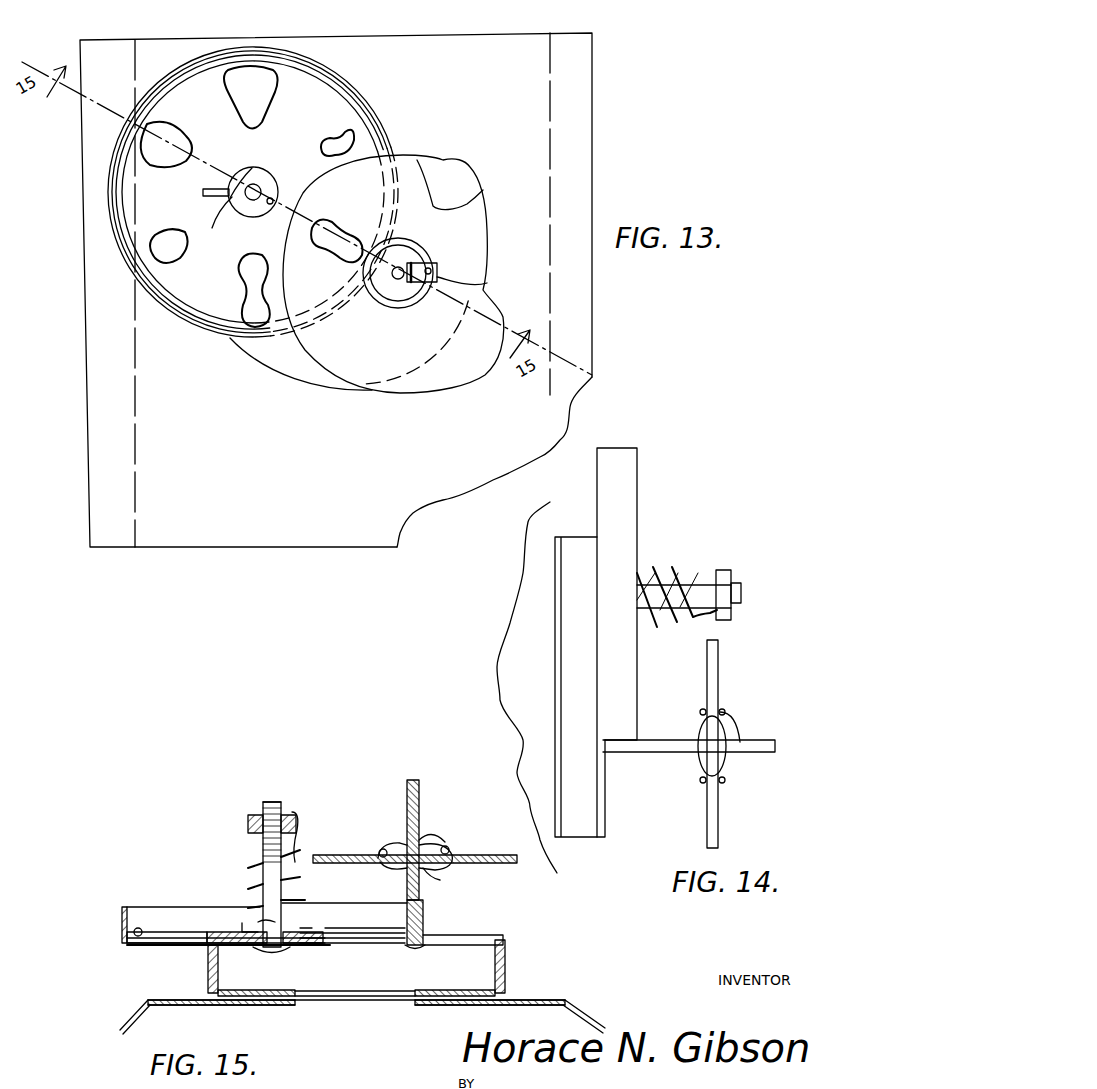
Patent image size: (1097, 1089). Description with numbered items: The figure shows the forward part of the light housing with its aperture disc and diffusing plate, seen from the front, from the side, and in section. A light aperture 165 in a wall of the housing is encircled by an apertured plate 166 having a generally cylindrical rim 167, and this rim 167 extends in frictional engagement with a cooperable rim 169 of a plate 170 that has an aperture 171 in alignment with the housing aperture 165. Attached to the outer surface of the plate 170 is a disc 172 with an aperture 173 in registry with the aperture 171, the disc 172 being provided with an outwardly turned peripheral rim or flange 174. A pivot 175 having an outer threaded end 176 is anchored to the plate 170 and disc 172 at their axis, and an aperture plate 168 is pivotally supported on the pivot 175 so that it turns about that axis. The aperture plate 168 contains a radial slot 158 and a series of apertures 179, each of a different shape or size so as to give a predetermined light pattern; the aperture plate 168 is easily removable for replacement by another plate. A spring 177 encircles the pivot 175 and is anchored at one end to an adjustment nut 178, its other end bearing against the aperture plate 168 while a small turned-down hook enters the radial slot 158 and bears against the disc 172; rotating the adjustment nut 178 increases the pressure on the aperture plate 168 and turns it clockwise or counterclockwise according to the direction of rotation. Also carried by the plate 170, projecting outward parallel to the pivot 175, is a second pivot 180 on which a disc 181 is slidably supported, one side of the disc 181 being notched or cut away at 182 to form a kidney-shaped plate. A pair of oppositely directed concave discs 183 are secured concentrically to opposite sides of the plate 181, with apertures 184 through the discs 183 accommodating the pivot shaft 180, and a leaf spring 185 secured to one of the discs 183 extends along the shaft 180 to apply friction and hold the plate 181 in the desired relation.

In FIG. 13, the radial slot 158 is at (225, 225).
In FIG. 15, the light aperture 165 is at (365, 995).
In FIG. 15, the apertured plate 166 is at (420, 980).
In FIG. 15, the cylindrical rim 167 is at (356, 968).
In FIG. 13, the aperture plate 168 is at (148, 210).
In FIG. 15, the aperture plate 168 is at (165, 935).
In FIG. 14, the cooperable rim 169 is at (585, 790).
In FIG. 15, the cooperable rim 169 is at (208, 970).
In FIG. 15, the plate 170 is at (490, 932).
In FIG. 15, the aperture 171 is at (348, 935).
In FIG. 15, the disc 172 is at (127, 948).
In FIG. 15, the aperture 173 is at (350, 936).
In FIG. 14, the peripheral rim or flange 174 is at (630, 495).
In FIG. 15, the peripheral rim or flange 174 is at (122, 920).
In FIG. 13, the pivot 175 is at (256, 192).
In FIG. 14, the pivot 175 is at (742, 596).
In FIG. 15, the pivot 175 is at (272, 802).
In FIG. 15, the outer threaded end 176 is at (262, 812).
In FIG. 13, the spring 177 is at (232, 166).
In FIG. 14, the spring 177 is at (678, 568).
In FIG. 15, the spring 177 is at (248, 888).
In FIG. 14, the adjustment nut 178 is at (725, 570).
In FIG. 15, the adjustment nut 178 is at (248, 828).
In FIG. 13, the apertures 179 is at (175, 126).
In FIG. 14, the second pivot 180 is at (768, 742).
In FIG. 15, the second pivot 180 is at (413, 780).
In FIG. 13, the disc 181 is at (400, 392).
In FIG. 14, the disc 181 is at (720, 660).
In FIG. 15, the disc 181 is at (476, 856).
In FIG. 13, the notch 182 is at (445, 210).
In FIG. 13, the concave discs 183 is at (405, 295).
In FIG. 14, the concave discs 183 is at (728, 755).
In FIG. 15, the concave discs 183 is at (395, 848).
In FIG. 15, the apertures 184 is at (450, 883).
In FIG. 13, the leaf spring 185 is at (437, 266).
In FIG. 14, the leaf spring 185 is at (732, 722).
In FIG. 15, the leaf spring 185 is at (427, 840).